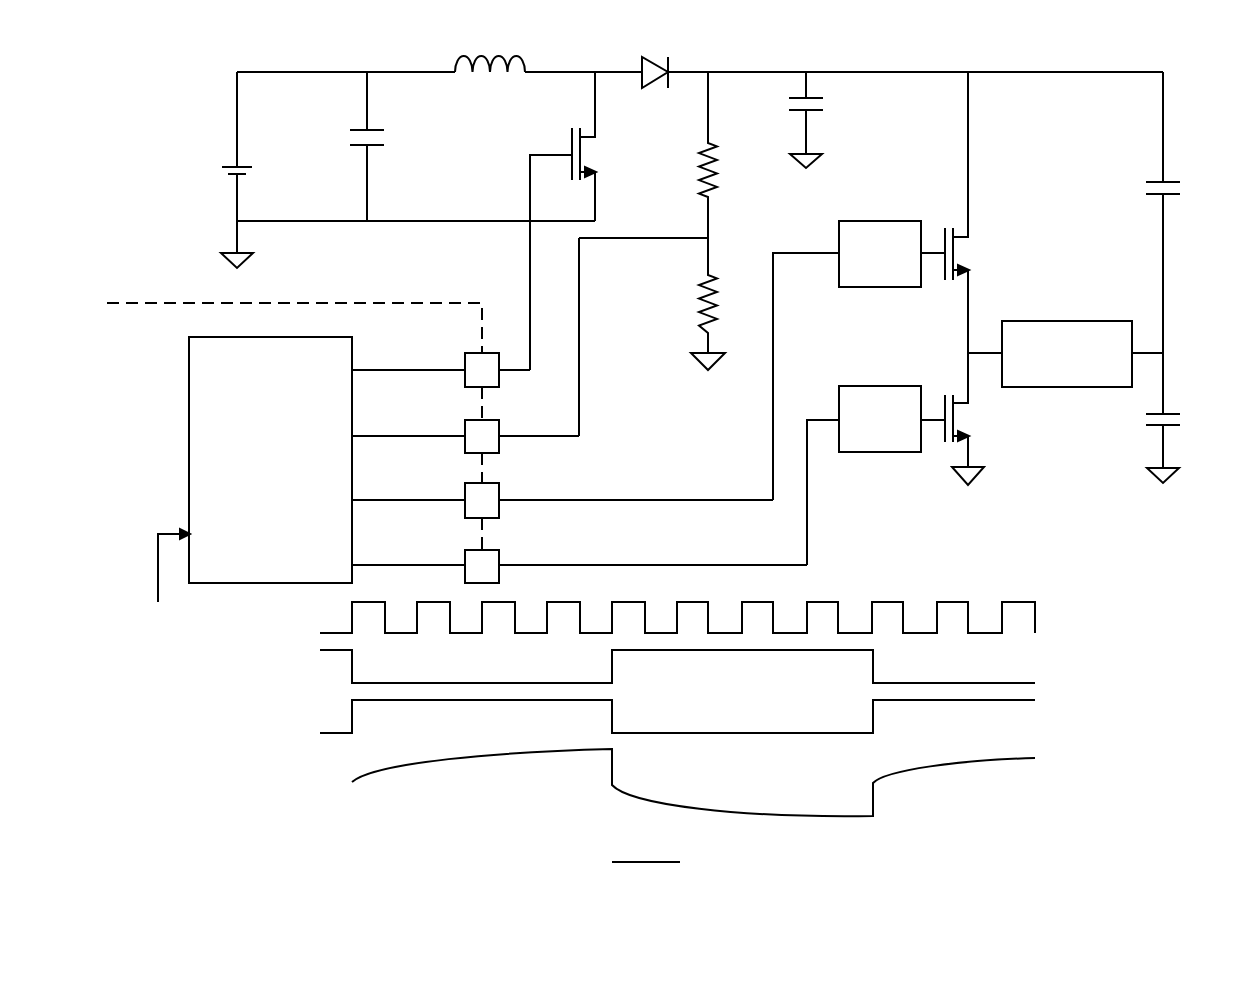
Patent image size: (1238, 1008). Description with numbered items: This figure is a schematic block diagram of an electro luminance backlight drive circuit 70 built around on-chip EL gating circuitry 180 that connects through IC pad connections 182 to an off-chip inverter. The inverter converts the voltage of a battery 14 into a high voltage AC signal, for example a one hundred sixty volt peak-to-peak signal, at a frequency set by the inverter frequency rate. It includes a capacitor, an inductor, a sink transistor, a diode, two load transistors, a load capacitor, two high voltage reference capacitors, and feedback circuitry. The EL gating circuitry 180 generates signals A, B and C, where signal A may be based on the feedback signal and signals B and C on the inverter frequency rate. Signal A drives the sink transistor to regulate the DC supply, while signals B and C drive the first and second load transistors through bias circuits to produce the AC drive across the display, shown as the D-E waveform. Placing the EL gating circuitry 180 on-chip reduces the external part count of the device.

The battery 14 is at (184, 146).
The electro luminance backlight drive circuit 70 is at (661, 467).
The EL gating circuitry 180 is at (270, 460).
The IC pad connections 182 is at (502, 345).